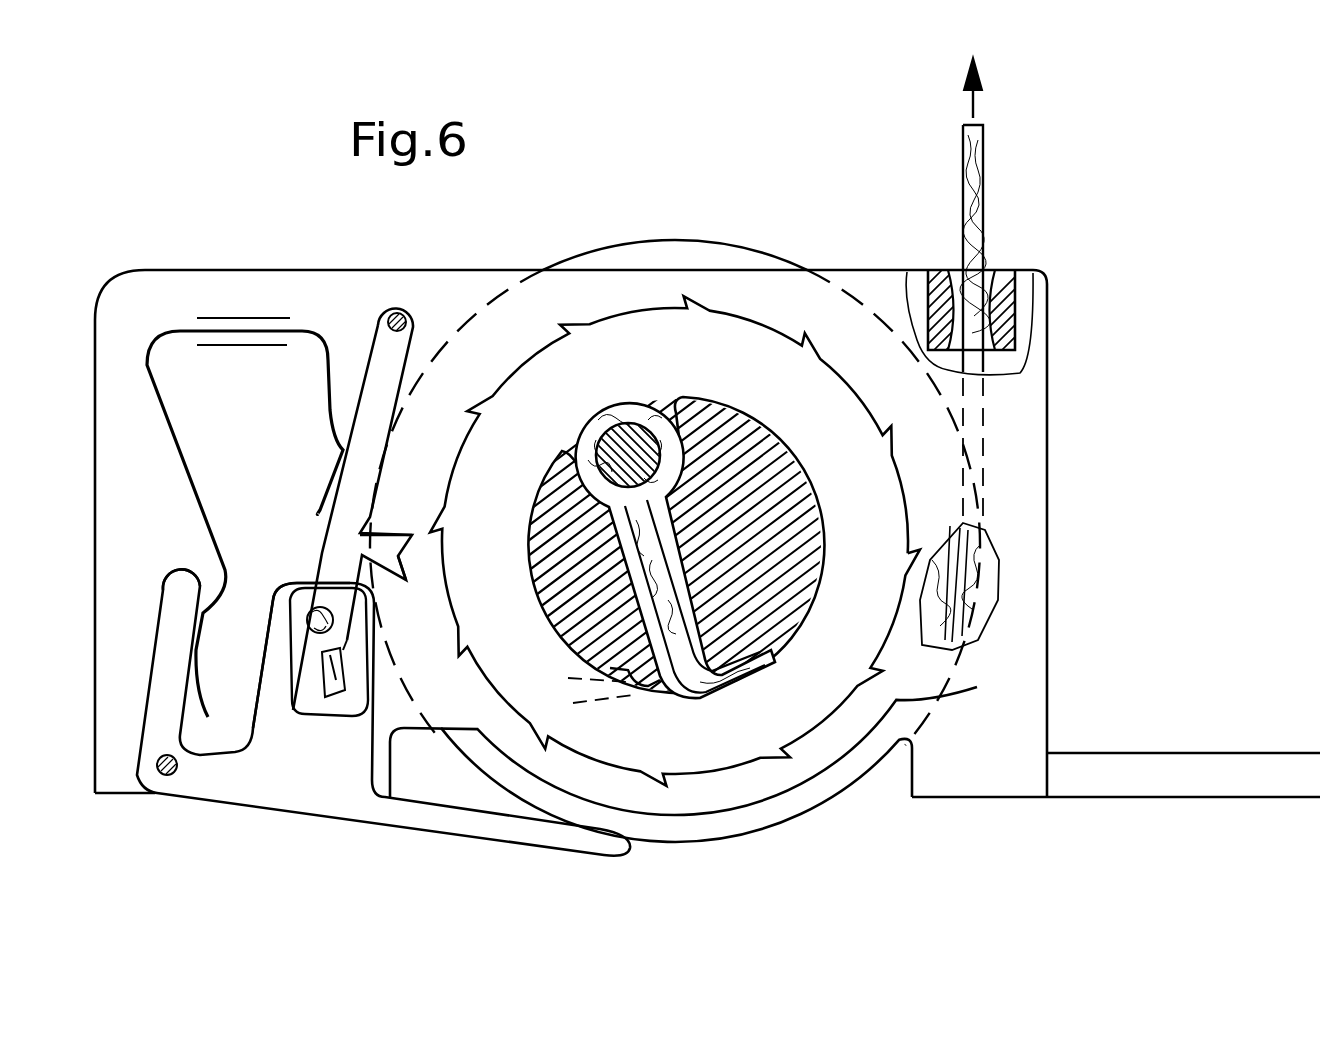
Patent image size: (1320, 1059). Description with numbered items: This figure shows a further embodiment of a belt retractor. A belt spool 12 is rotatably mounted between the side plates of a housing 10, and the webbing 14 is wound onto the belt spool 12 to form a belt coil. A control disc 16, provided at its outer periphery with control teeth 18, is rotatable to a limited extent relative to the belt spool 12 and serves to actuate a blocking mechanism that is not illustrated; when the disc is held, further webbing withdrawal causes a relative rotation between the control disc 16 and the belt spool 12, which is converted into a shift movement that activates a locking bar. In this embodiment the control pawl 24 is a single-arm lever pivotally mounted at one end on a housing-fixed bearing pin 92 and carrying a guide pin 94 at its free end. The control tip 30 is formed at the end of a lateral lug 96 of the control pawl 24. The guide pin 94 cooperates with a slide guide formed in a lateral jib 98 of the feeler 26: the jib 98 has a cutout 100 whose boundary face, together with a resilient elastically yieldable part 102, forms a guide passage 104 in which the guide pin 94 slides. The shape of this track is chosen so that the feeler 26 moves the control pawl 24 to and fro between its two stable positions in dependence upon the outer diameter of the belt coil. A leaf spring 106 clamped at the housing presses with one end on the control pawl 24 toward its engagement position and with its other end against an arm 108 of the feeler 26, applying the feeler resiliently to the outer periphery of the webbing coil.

The housing 10 is at (1033, 654).
The belt spool 12 is at (810, 524).
The webbing 14 is at (978, 225).
The control disc 16 is at (775, 350).
The control teeth 18 is at (936, 694).
The control pawl 24 is at (363, 357).
The feeler 26 is at (411, 827).
The control tip 30 is at (402, 537).
The bearing pin 92 is at (400, 311).
The guide pin 94 is at (310, 600).
The lateral lug 96 is at (398, 557).
The lateral jib 98 is at (288, 637).
The cutout 100 is at (307, 672).
The resilient elastically yieldable part 102 is at (320, 712).
The guide passage 104 is at (372, 690).
The leaf spring 106 is at (322, 372).
The arm 108 is at (170, 598).